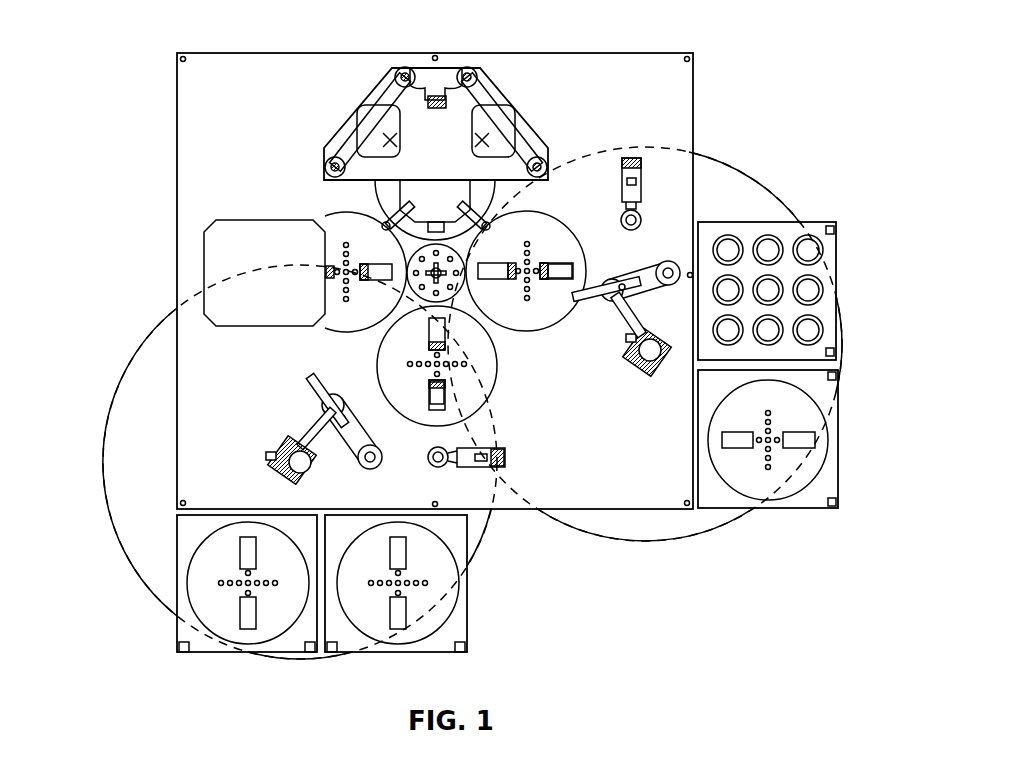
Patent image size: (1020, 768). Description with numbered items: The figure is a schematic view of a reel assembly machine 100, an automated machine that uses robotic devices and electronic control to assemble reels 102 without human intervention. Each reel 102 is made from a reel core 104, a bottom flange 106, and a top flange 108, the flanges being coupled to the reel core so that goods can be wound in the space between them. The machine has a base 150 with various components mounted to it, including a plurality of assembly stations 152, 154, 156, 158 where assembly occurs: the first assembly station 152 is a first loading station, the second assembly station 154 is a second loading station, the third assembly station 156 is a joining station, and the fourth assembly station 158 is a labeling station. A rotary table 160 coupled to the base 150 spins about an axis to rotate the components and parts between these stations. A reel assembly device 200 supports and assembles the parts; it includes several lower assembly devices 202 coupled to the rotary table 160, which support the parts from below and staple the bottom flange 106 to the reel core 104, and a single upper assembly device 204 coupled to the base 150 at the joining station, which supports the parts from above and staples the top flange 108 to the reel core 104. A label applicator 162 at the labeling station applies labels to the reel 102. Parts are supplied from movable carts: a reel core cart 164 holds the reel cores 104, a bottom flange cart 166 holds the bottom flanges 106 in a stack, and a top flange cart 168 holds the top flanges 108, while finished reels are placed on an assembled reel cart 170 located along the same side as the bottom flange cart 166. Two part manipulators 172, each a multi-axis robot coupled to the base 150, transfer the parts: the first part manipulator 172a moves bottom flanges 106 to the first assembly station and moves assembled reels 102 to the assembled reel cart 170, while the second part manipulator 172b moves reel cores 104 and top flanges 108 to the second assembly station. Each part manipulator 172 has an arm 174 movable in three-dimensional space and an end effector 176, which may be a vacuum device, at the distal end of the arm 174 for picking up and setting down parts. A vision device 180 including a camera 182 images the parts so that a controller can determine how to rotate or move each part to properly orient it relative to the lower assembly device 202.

The reel assembly machine 100 is at (727, 40).
The reel 102 is at (333, 320).
The reel core 104 is at (830, 277).
The bottom flange 106 is at (440, 605).
The top flange 108 is at (805, 488).
The base 150 is at (672, 100).
The first assembly station 152 is at (505, 350).
The second assembly station 154 is at (567, 220).
The third assembly station 156 is at (358, 198).
The fourth assembly station 158 is at (318, 343).
The rotary table 160 is at (495, 403).
The label applicator 162 is at (232, 248).
The reel core cart 164 is at (822, 310).
The bottom flange cart 166 is at (455, 633).
The top flange cart 168 is at (827, 486).
The assembled reel cart 170 is at (197, 650).
The part manipulator 172 is at (650, 370).
The first part manipulator 172a is at (290, 434).
The second part manipulator 172b is at (656, 268).
The arm 174 is at (360, 445).
The end effector 176 is at (300, 377).
The vision device 180 is at (466, 463).
The camera 182 is at (440, 468).
The reel assembly device 200 is at (360, 90).
The lower assembly device 202 is at (565, 272).
The upper assembly device 204 is at (462, 132).